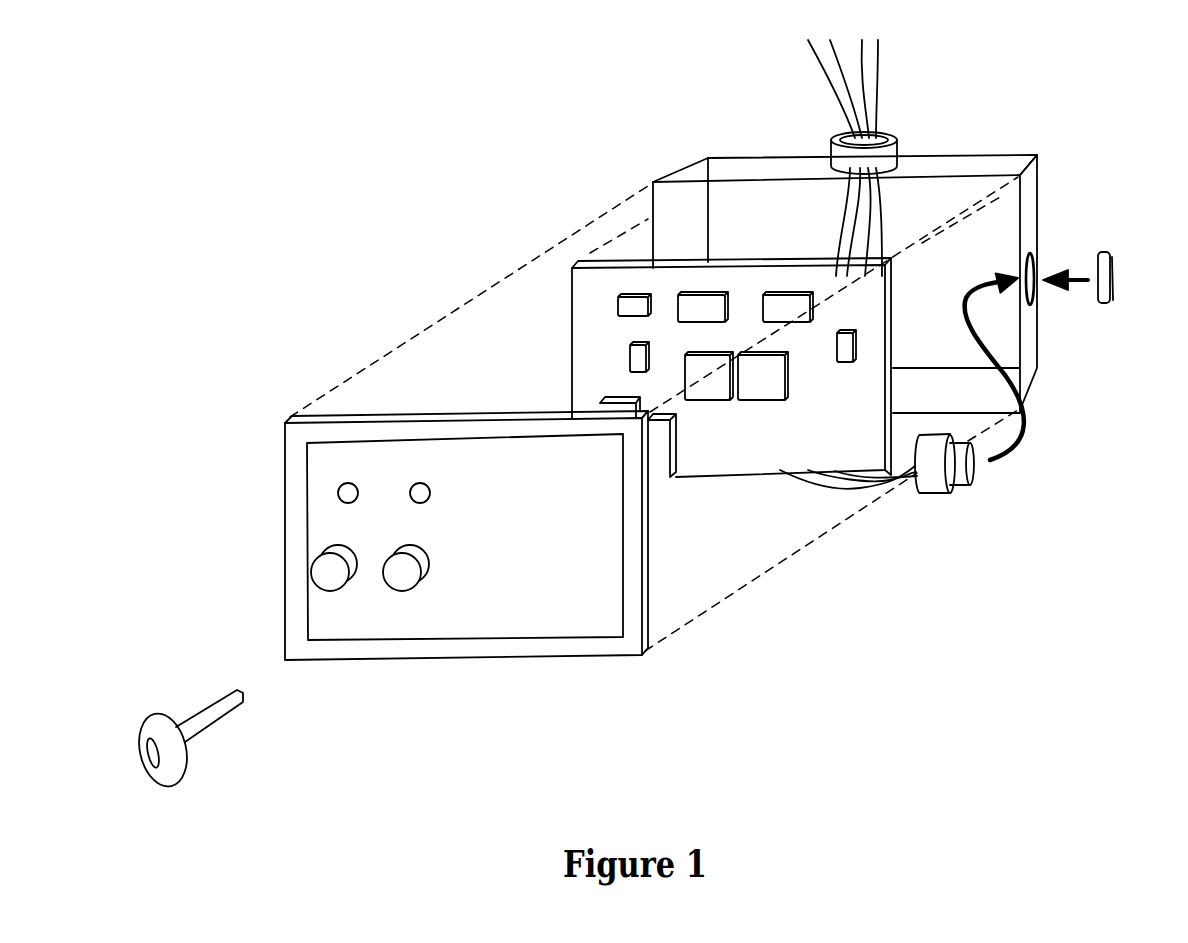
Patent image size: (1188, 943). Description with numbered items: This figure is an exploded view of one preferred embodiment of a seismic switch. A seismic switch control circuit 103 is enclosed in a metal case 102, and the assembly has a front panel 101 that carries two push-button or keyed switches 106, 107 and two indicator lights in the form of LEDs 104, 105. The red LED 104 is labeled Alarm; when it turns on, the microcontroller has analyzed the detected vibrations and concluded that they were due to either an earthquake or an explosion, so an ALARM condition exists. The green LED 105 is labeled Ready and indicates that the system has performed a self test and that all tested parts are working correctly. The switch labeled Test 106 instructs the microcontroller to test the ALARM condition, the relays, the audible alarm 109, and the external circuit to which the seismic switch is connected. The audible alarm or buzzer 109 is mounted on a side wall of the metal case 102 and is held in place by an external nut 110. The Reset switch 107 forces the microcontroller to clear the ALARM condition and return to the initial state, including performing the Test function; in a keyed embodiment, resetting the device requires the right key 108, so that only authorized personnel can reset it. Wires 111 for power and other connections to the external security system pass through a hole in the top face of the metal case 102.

The front panel 101 is at (595, 627).
The metal case 102 is at (710, 165).
The seismic switch control circuit 103 is at (580, 290).
The red LED 104 is at (400, 465).
The green LED 105 is at (325, 480).
The Test switch 106 is at (350, 615).
The Reset switch 107 is at (450, 600).
The key 108 is at (177, 752).
The audible alarm 109 is at (960, 502).
The external nut 110 is at (1112, 307).
The wires 111 is at (885, 75).